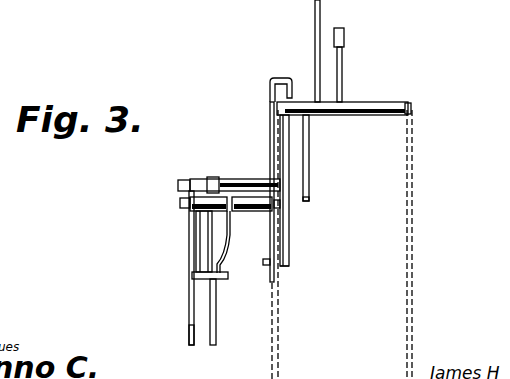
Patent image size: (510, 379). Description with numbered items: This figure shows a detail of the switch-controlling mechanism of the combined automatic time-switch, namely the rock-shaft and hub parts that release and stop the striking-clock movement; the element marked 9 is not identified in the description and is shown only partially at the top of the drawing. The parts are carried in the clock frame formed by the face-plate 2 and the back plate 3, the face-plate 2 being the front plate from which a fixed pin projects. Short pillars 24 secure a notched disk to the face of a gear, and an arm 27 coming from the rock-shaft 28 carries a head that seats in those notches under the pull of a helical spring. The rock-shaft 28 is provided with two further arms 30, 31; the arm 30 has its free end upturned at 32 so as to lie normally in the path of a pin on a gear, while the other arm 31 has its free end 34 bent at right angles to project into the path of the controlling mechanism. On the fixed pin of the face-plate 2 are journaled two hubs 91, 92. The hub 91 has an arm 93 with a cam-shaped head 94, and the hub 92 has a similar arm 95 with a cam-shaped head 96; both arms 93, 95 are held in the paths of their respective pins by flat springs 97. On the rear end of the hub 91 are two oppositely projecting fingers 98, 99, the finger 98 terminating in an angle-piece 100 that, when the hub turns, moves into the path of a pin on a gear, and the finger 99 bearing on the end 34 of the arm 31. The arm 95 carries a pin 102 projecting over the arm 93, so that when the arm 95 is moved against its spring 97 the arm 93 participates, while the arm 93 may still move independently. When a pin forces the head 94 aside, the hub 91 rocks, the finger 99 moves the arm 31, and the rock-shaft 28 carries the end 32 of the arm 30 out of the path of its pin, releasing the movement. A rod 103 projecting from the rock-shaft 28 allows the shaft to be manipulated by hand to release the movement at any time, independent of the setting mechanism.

The face-plate 2 is at (277, 311).
The back plate 3 is at (413, 150).
The housing 9 is at (370, 5).
The short pillars 24 is at (345, 40).
The arm 27 is at (343, 66).
The rock-shaft 28 is at (368, 101).
The arm 30 is at (310, 153).
The arm 31 is at (291, 224).
The upturned end 32 is at (310, 199).
The free end 34 is at (285, 268).
The hub 91 is at (240, 196).
The hub 92 is at (204, 192).
The arm 93 is at (226, 247).
The cam-shaped head 94 is at (217, 338).
The arm 95 is at (188, 298).
The cam-shaped head 96 is at (188, 338).
The flat springs 97 is at (190, 223).
The finger 98 is at (178, 186).
The finger 99 is at (268, 271).
The angle-piece 100 is at (282, 77).
The pin 102 is at (205, 274).
The rod 103 is at (315, 26).